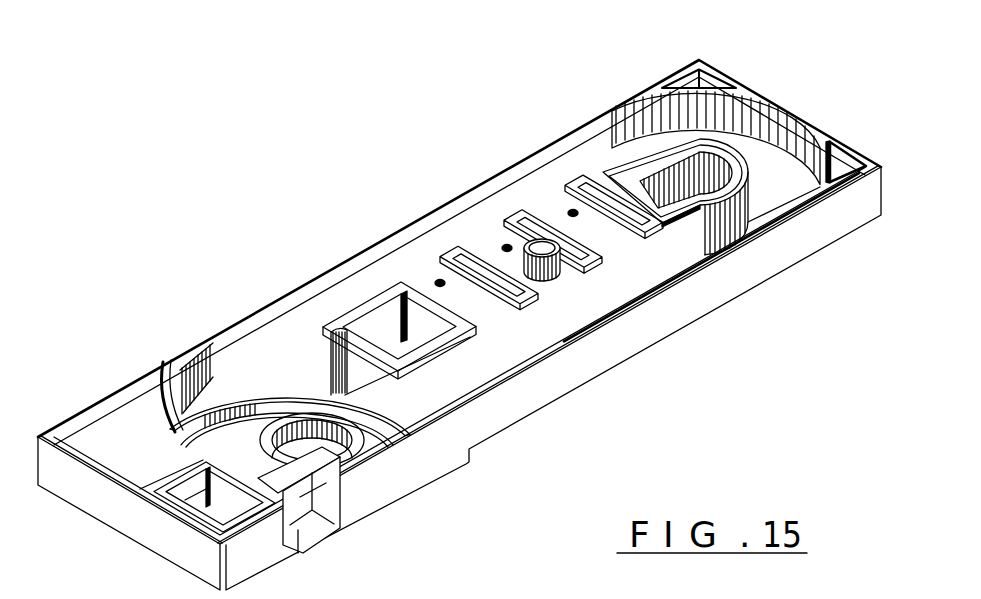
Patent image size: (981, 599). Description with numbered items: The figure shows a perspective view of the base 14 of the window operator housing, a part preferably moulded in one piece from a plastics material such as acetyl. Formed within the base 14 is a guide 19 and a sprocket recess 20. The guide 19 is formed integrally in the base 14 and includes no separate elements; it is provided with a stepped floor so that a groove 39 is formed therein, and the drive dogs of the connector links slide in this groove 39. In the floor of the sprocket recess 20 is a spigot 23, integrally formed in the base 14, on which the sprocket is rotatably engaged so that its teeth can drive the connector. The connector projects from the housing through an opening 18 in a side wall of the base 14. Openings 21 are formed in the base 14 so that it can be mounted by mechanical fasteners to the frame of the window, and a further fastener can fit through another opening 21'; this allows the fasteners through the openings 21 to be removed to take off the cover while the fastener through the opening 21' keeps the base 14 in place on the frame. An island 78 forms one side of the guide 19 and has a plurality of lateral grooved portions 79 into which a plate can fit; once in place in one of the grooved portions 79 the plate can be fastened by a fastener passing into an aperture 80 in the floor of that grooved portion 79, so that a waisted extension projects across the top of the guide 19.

The base 14 is at (790, 247).
The opening 18 is at (305, 517).
The guide 19 is at (460, 217).
The sprocket recess 20 is at (382, 438).
The openings 21 is at (258, 452).
The opening 21' is at (711, 279).
The spigot 23 is at (293, 417).
The groove 39 is at (760, 200).
The island 78 is at (385, 300).
The grooved portions 79 is at (590, 255).
The aperture 80 is at (440, 280).